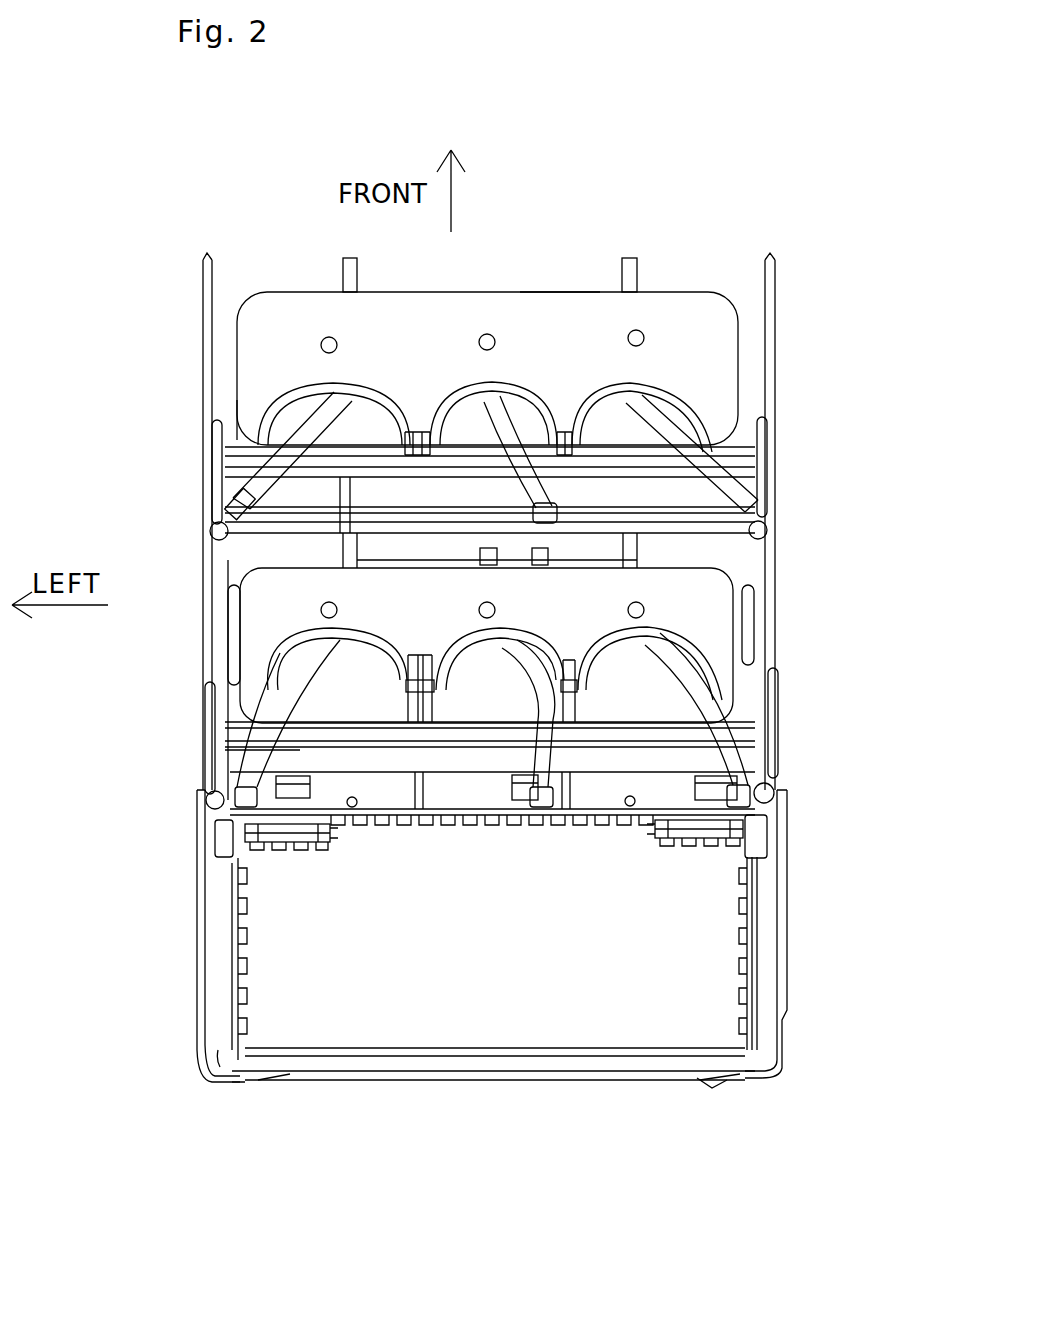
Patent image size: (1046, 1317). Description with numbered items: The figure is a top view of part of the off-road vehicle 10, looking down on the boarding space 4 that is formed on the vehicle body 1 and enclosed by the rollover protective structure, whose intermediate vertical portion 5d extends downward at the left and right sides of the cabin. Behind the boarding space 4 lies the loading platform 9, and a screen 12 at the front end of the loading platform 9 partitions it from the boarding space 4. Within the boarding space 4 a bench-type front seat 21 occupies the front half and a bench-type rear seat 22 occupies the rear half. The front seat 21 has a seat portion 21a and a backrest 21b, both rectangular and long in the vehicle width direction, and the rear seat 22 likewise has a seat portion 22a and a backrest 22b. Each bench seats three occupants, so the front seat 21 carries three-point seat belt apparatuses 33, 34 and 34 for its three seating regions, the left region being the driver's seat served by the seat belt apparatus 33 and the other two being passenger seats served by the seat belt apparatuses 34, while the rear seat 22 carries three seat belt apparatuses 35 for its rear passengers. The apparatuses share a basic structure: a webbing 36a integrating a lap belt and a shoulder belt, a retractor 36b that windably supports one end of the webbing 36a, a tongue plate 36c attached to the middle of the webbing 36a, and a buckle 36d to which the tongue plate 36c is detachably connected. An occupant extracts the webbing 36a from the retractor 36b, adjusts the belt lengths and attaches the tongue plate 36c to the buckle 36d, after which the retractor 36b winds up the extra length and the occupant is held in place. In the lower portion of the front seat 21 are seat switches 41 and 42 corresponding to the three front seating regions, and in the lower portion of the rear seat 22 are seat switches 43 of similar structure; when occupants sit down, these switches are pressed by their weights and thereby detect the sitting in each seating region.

The vehicle body 1 is at (768, 657).
The boarding space 4 is at (713, 551).
The intermediate vertical portion 5d is at (207, 525).
The loading platform 9 is at (488, 1000).
The off-road vehicle 10 is at (720, 1108).
The screen 12 is at (580, 820).
The front seat 21 is at (730, 331).
The seat portion 21a is at (557, 262).
The backrest 21b is at (300, 488).
The rear seat 22 is at (741, 644).
The seat portion 22a is at (265, 633).
The backrest 22b is at (295, 756).
The seat belt apparatus 33 is at (352, 378).
The seat belt apparatus 34 is at (512, 378).
The seat belt apparatus 35 is at (360, 622).
The webbing 36a is at (307, 672).
The retractor 36b is at (318, 833).
The tongue plate 36c is at (428, 660).
The buckle 36d is at (575, 683).
The seat switch 41 is at (320, 342).
The seat switch 42 is at (475, 340).
The seat switch 43 is at (320, 608).